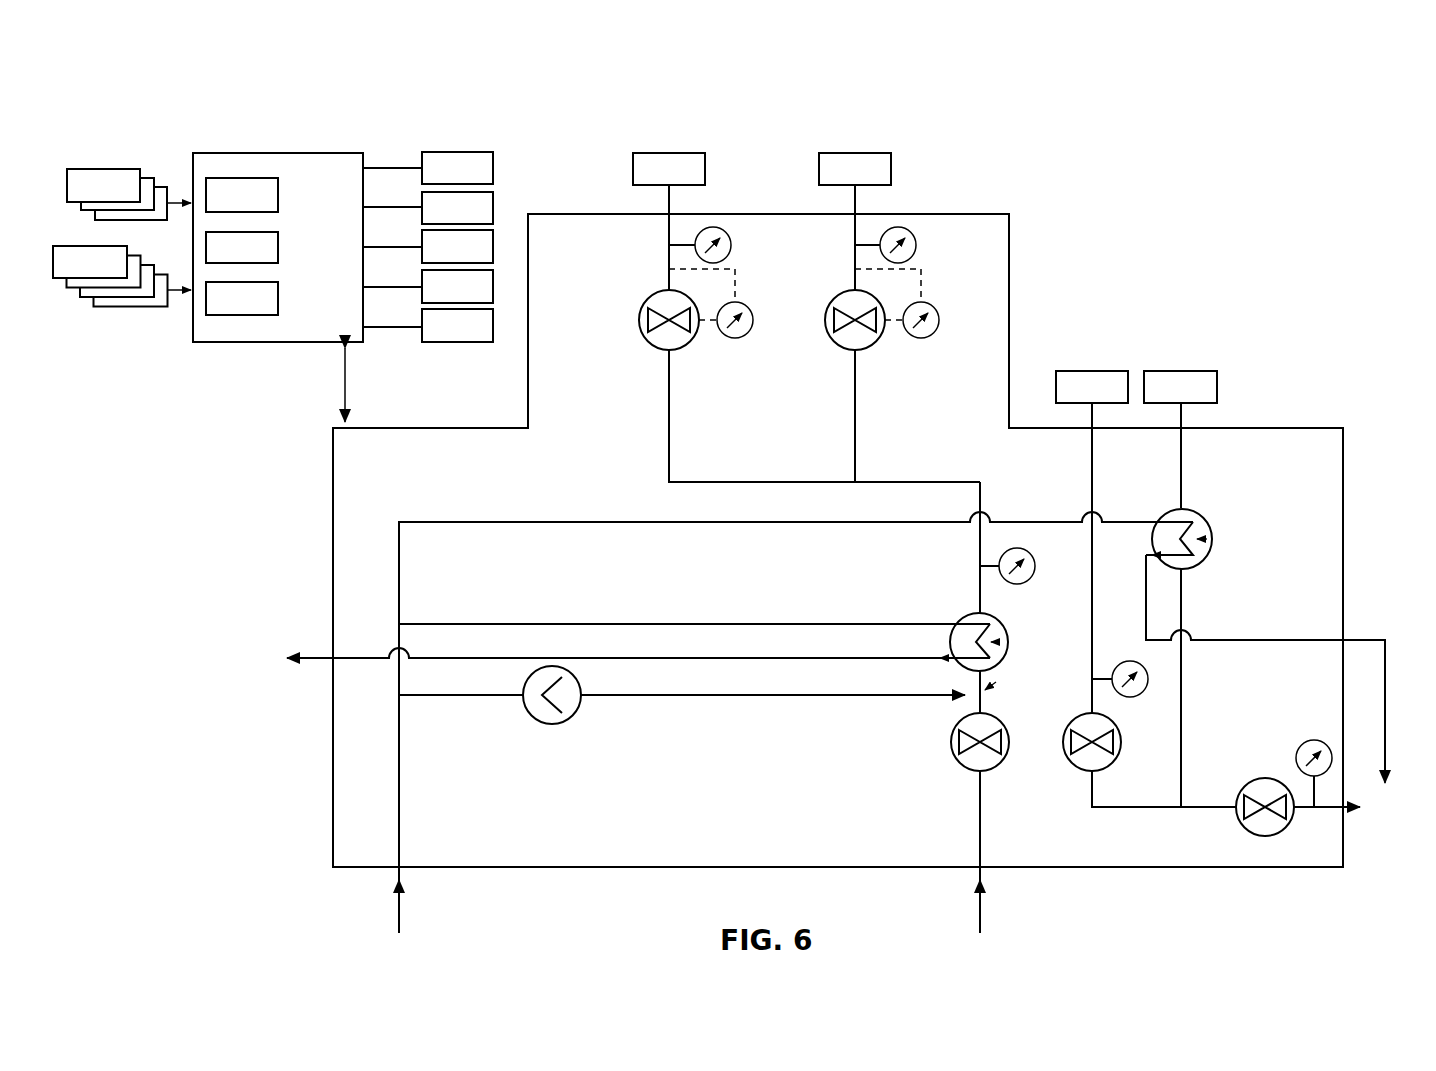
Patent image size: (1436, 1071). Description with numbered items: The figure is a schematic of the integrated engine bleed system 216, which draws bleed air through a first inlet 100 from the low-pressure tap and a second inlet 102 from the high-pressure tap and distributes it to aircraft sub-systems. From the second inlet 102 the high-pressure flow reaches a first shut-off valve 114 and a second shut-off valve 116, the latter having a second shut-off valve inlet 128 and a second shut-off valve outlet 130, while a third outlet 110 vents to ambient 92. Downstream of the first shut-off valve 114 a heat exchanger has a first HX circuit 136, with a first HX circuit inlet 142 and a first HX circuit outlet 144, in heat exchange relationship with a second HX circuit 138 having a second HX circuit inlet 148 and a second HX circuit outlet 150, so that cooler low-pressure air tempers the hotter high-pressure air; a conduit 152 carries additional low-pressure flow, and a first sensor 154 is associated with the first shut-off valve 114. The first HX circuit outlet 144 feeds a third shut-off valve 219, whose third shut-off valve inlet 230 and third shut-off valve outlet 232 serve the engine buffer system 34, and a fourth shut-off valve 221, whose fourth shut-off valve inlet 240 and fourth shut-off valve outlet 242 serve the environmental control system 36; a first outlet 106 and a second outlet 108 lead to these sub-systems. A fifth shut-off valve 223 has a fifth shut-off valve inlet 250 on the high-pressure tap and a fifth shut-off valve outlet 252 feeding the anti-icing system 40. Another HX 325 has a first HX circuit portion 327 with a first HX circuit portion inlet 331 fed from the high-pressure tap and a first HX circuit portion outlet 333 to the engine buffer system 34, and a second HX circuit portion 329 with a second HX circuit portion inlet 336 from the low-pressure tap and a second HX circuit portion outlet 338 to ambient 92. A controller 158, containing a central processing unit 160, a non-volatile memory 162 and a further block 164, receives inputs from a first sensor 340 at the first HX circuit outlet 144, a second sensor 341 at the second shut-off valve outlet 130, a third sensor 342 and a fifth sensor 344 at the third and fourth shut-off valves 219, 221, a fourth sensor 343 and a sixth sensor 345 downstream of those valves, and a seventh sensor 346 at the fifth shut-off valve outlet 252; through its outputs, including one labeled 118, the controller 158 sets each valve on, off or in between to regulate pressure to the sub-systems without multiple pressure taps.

The integrated engine bleed system 216 is at (292, 830).
The controller 158 is at (205, 112).
The central processing unit 160 is at (279, 195).
The non-volatile memory 162 is at (279, 248).
The control module 164 is at (279, 298).
The second shut-off valve 116 is at (494, 165).
The valve 118 is at (494, 205).
The third shut-off valve 219 is at (494, 247).
The fourth shut-off valve 221 is at (494, 287).
The fifth shut-off valve 223 is at (455, 343).
The first sensor 340 is at (93, 169).
The second sensor 341 is at (143, 178).
The third sensor 342 is at (157, 187).
The fourth sensor 343 is at (62, 278).
The fifth sensor 344 is at (70, 288).
The sixth sensor 345 is at (85, 297).
The seventh sensor 346 is at (150, 307).
The environmental control system 36 is at (669, 153).
The engine buffer system 34 is at (856, 153).
The anti-icing system 40 is at (1092, 371).
The first outlet 106 is at (669, 208).
The second outlet 108 is at (855, 205).
The fourth shut-off valve outlet 242 is at (669, 282).
The third shut-off valve outlet 232 is at (855, 282).
The fourth shut-off valve inlet 240 is at (669, 385).
The third shut-off valve inlet 230 is at (855, 365).
The first HX circuit outlet 144 is at (982, 597).
The second inlet 102 is at (981, 905).
The first shut-off valve 114 is at (950, 742).
The first HX circuit 136 is at (995, 690).
The second HX circuit 138 is at (1002, 648).
The second HX circuit inlet 148 is at (952, 624).
The second HX circuit outlet 150 is at (952, 660).
The ambient 92 is at (295, 657).
The first HX circuit inlet 142 is at (966, 692).
The conduit 152 is at (655, 696).
The first sensor 154 is at (555, 724).
The first inlet 100 is at (400, 912).
The fifth shut-off valve outlet 252 is at (1094, 692).
The fifth shut-off valve inlet 250 is at (1094, 797).
The second shut-off valve inlet 128 is at (1215, 810).
The second shut-off valve outlet 130 is at (1300, 812).
The third outlet 110 is at (1355, 810).
The second HX circuit portion inlet 336 is at (1142, 521).
The first HX circuit portion outlet 333 is at (1186, 509).
The heat exchanger 325 is at (1245, 537).
The second HX circuit portion 329 is at (1208, 542).
The first HX circuit portion 327 is at (1198, 579).
The first HX circuit portion inlet 331 is at (1182, 577).
The second HX circuit portion outlet 338 is at (1144, 585).